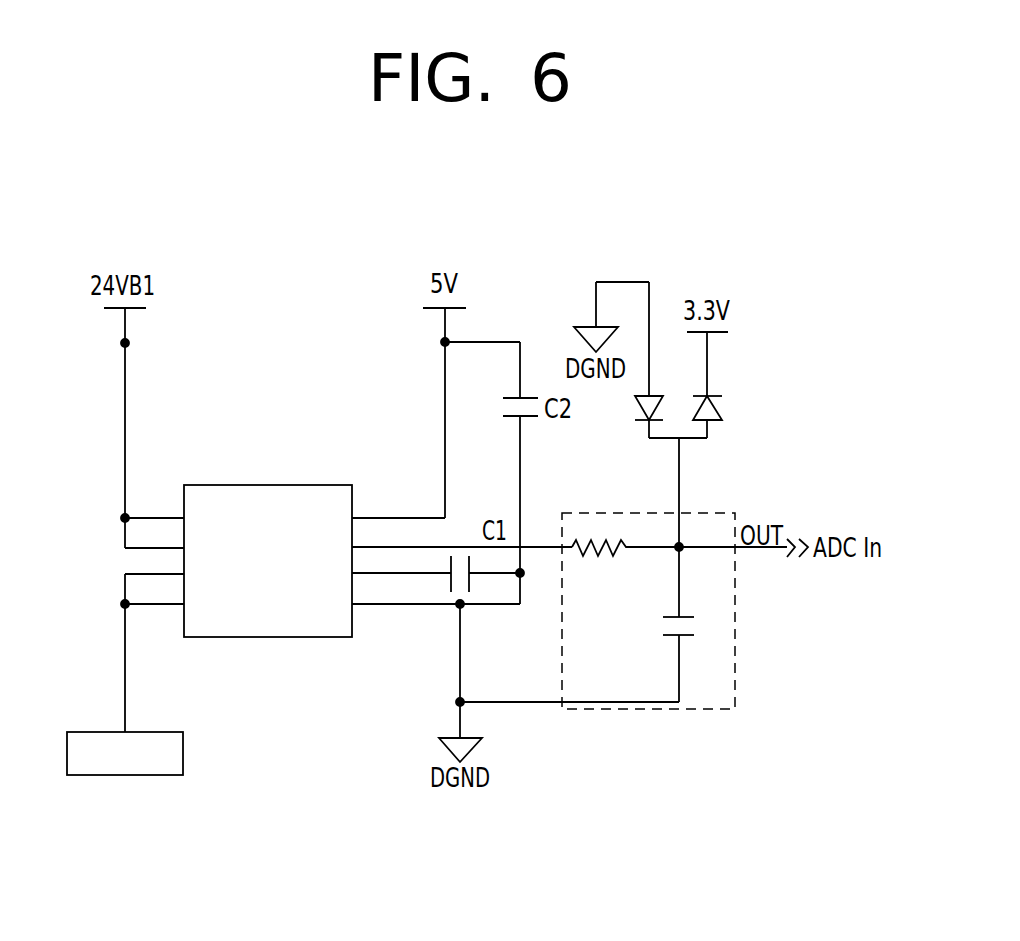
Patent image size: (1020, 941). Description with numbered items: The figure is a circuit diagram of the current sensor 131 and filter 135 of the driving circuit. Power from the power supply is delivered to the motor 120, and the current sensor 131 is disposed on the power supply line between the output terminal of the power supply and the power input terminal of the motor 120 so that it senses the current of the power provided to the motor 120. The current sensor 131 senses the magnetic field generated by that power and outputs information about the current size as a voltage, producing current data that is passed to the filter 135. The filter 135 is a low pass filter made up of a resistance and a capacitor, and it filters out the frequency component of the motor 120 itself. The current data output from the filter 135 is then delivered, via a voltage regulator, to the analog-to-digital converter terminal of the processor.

The current sensor 131 is at (205, 485).
The motor 120 is at (183, 753).
The filter 135 is at (706, 712).